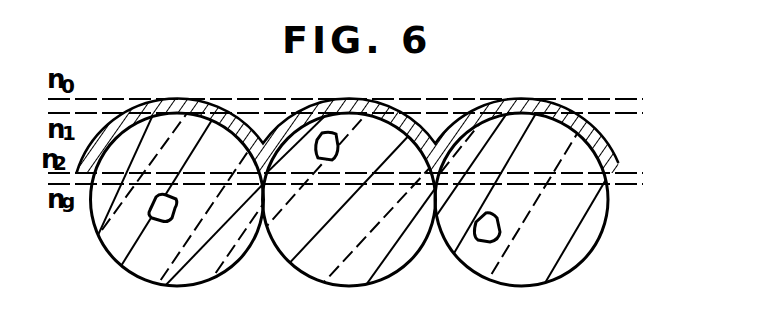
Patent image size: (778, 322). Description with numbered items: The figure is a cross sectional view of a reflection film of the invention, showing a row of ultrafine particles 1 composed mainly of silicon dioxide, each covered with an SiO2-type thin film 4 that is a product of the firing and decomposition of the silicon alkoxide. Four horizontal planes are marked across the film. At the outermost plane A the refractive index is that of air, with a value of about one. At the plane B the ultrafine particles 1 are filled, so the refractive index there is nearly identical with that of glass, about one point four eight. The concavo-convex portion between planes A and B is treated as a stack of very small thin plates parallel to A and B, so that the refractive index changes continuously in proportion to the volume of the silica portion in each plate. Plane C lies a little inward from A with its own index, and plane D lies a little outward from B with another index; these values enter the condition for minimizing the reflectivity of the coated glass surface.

The ultrafine particles 1 is at (582, 249).
The SiO2 thin film 4 is at (597, 147).
The position A is at (357, 94).
The position B is at (357, 193).
The position C is at (357, 122).
The position D is at (358, 169).